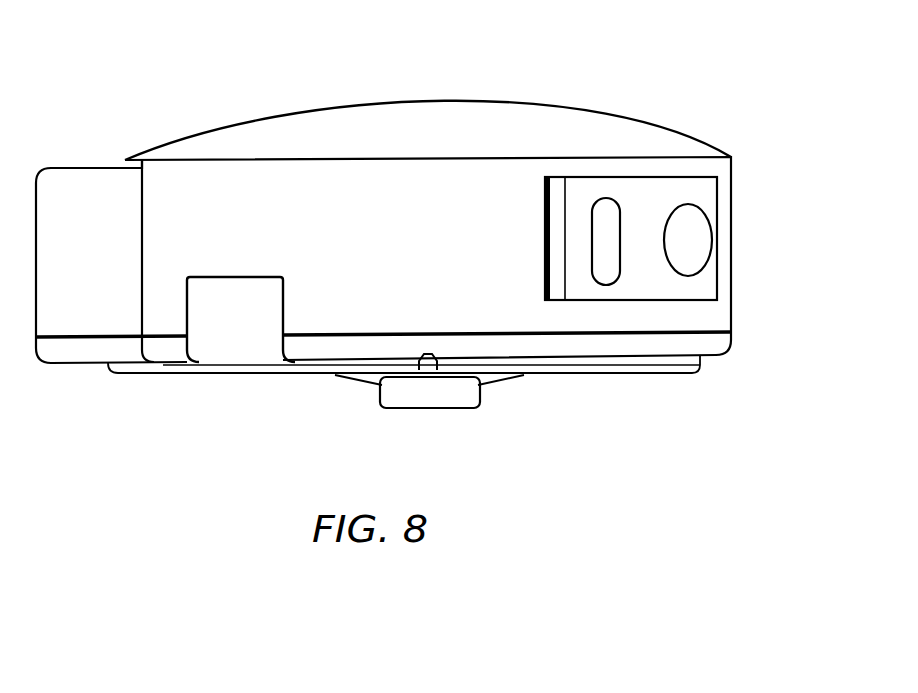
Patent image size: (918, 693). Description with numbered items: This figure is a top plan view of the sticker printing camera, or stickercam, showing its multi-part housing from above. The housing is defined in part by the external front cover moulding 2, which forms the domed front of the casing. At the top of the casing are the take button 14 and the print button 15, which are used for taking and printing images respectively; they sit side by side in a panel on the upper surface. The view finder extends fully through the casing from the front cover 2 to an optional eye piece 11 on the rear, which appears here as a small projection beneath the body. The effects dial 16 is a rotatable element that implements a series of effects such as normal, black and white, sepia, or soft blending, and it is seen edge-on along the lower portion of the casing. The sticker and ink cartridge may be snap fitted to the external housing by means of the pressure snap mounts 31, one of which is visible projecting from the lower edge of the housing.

The external front cover moulding 2 is at (428, 115).
The take button 14 is at (602, 222).
The print button 15 is at (698, 227).
The pressure snap mounts 31 is at (231, 325).
The effects dial 16 is at (275, 378).
The eye piece 11 is at (482, 398).